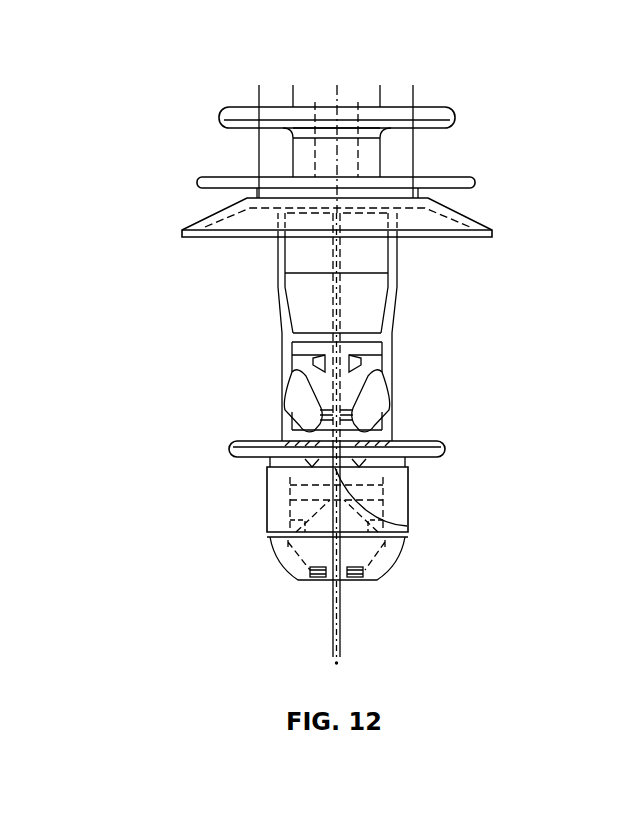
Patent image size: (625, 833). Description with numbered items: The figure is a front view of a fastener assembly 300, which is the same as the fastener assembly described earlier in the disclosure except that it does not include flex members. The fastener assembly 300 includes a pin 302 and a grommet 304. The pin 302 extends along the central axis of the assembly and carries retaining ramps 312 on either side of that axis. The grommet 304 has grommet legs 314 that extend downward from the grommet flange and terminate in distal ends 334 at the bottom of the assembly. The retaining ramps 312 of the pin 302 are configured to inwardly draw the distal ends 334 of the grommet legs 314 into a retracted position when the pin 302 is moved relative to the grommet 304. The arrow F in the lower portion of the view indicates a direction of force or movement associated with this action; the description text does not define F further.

The fastener assembly 300 is at (173, 88).
The pin 302 is at (438, 110).
The grommet 304 is at (443, 453).
The retaining ramps 312 is at (297, 372).
The grommet legs 314 is at (265, 497).
The distal ends 334 is at (295, 577).
The force direction F is at (407, 526).